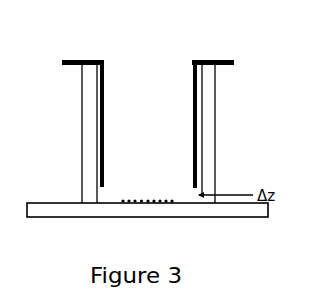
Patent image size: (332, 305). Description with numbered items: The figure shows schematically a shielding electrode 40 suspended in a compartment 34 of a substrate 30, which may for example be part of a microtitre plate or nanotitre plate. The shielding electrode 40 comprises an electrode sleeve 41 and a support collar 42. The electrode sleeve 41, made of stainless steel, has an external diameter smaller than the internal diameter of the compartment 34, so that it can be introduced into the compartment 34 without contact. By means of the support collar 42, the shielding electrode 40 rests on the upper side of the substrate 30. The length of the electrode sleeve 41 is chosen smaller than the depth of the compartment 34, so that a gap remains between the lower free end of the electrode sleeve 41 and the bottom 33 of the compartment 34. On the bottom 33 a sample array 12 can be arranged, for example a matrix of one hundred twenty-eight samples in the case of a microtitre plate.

The sample array 12 is at (128, 205).
The bottom 33 is at (189, 202).
The substrate 30 is at (72, 187).
The compartment 34 is at (152, 160).
The shielding electrode 40 is at (210, 114).
The electrode sleeve 41 is at (195, 123).
The support collar 42 is at (215, 62).